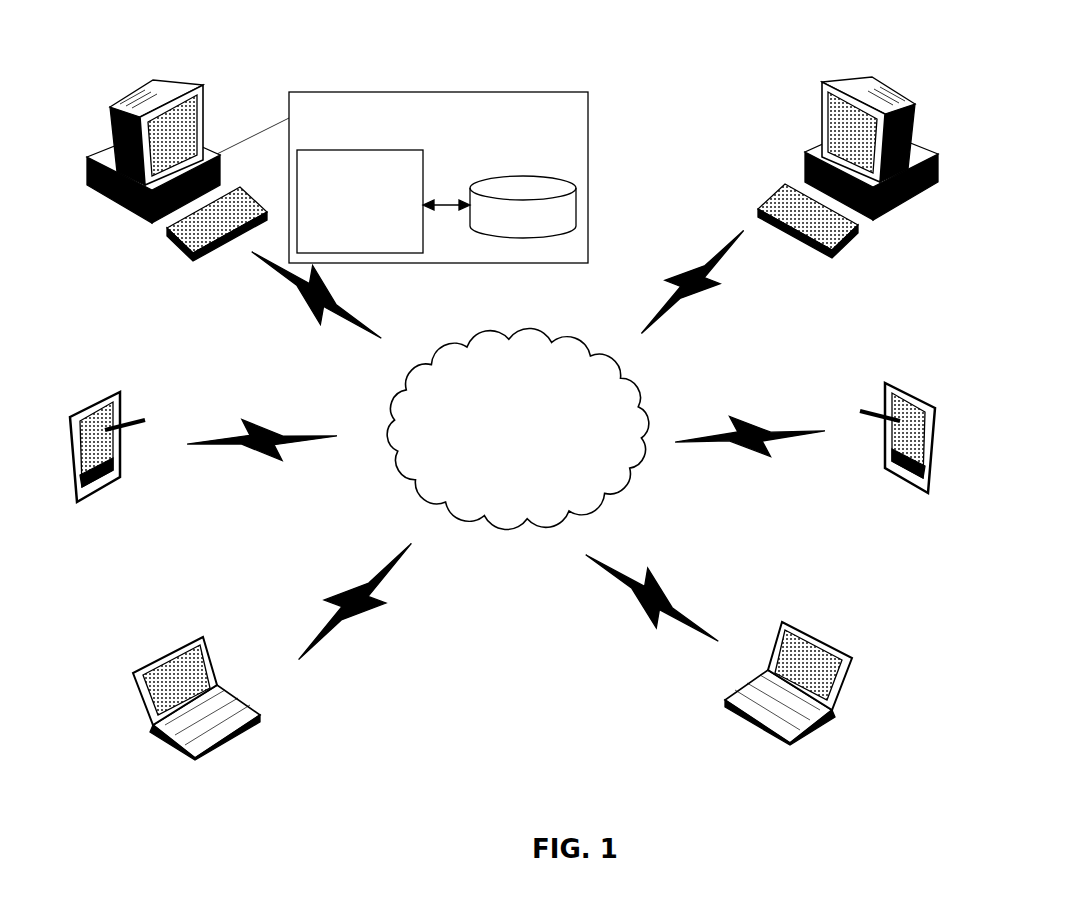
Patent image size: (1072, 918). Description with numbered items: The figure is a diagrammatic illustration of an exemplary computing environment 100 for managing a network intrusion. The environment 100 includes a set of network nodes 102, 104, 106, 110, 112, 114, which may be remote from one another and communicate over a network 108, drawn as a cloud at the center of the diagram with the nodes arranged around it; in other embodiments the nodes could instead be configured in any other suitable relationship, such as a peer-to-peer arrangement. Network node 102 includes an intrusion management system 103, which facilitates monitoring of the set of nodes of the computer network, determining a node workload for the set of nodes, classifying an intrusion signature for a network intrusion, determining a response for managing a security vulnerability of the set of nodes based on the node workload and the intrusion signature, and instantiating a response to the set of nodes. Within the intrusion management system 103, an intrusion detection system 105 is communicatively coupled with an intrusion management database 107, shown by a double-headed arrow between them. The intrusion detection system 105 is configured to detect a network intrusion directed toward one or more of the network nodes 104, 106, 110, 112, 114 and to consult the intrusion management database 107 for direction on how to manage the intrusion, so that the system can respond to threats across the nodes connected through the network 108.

The environment 100 is at (592, 70).
The network node 102 is at (200, 93).
The intrusion management system 103 is at (438, 177).
The network node 104 is at (115, 392).
The intrusion detection system 105 is at (360, 201).
The network node 106 is at (190, 637).
The intrusion management database 107 is at (578, 186).
The network 108 is at (518, 338).
The network node 110 is at (893, 90).
The network node 112 is at (937, 400).
The network node 114 is at (852, 657).